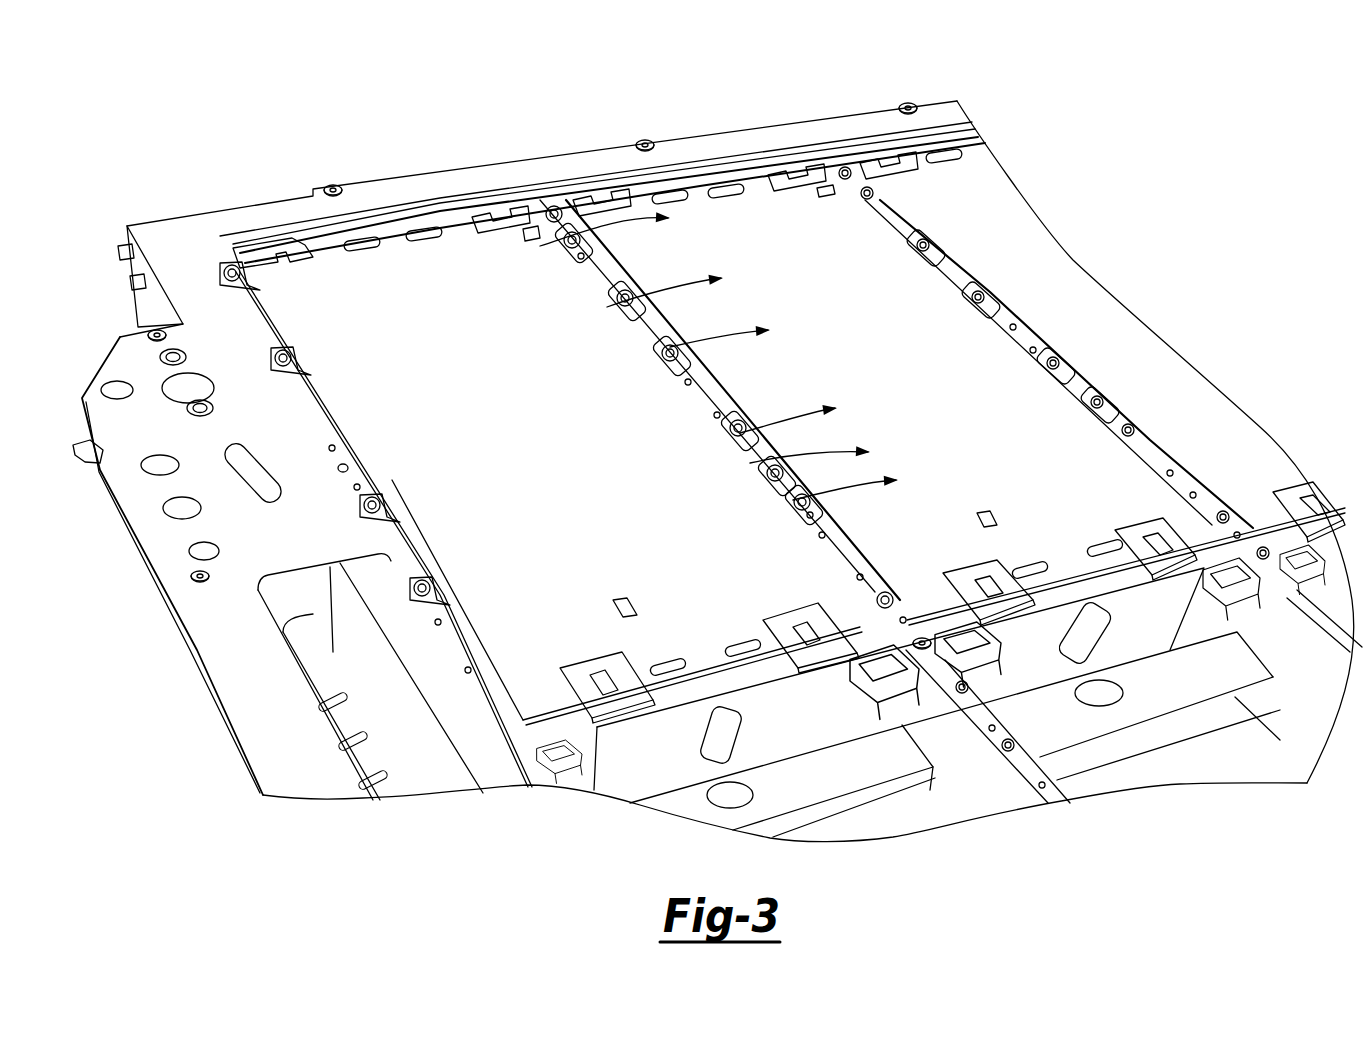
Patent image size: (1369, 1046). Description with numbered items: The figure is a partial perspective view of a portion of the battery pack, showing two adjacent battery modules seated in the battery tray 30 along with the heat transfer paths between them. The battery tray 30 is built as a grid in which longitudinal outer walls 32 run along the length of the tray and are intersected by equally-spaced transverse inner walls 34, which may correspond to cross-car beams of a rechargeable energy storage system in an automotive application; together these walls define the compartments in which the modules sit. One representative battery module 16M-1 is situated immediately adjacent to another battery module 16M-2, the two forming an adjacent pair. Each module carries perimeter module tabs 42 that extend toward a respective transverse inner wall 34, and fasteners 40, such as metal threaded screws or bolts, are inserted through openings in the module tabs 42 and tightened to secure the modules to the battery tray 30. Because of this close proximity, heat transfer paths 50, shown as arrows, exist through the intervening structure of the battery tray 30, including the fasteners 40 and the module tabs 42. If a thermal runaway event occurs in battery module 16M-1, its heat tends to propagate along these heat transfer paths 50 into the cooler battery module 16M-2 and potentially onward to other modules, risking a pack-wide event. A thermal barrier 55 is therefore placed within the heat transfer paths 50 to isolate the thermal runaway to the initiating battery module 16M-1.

The battery tray 30 is at (85, 343).
The longitudinal outer walls 32 is at (436, 186).
The transverse inner walls 34 is at (275, 300).
The fasteners 40 is at (225, 264).
The module tabs 42 is at (233, 288).
The heat transfer paths 50 is at (565, 242).
The thermal barrier 55 is at (674, 308).
The battery module 16M-1 is at (627, 585).
The battery module 16M-2 is at (1111, 488).